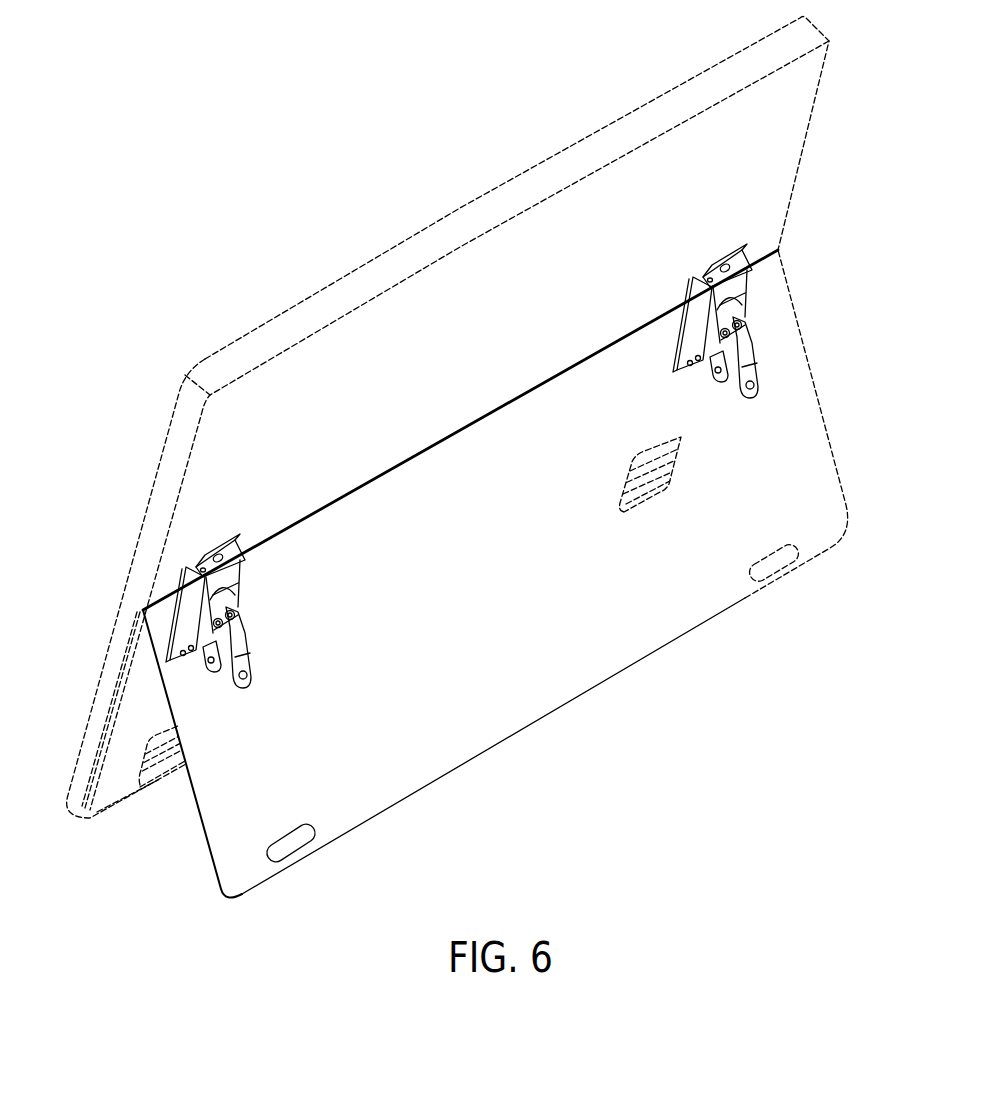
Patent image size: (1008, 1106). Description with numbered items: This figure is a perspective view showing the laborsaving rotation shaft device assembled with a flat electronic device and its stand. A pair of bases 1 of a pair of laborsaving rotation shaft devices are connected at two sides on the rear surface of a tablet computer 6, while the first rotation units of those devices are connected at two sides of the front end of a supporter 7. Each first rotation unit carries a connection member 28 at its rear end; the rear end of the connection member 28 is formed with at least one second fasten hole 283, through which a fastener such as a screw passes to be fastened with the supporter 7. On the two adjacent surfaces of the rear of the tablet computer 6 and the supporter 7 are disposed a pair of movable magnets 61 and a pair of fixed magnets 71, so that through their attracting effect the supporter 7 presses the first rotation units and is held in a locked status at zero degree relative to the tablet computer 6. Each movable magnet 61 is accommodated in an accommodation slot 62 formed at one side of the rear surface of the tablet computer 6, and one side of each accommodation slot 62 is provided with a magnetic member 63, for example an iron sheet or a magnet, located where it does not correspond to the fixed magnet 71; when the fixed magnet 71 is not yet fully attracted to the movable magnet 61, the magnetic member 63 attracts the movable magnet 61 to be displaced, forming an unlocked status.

The base 1 is at (185, 586).
The tablet computer 6 is at (430, 228).
The supporter 7 is at (597, 690).
The connection member 28 is at (250, 651).
The second fasten hole 283 is at (250, 680).
The movable magnet 61 is at (673, 483).
The accommodation slot 62 is at (632, 513).
The magnetic member 63 is at (680, 450).
The fixed magnet 71 is at (293, 853).